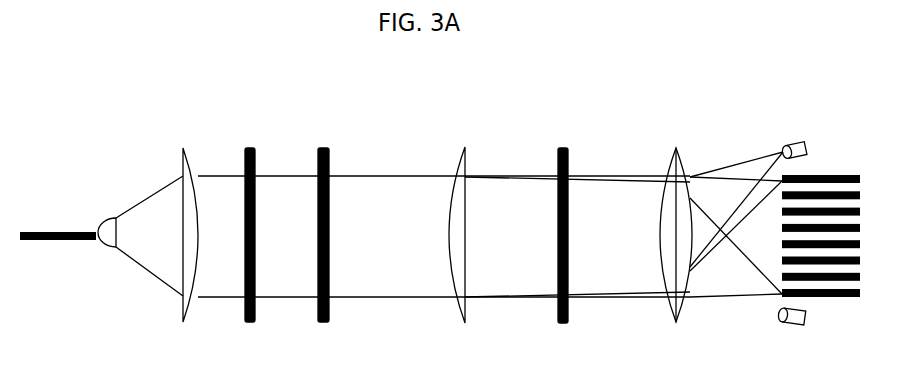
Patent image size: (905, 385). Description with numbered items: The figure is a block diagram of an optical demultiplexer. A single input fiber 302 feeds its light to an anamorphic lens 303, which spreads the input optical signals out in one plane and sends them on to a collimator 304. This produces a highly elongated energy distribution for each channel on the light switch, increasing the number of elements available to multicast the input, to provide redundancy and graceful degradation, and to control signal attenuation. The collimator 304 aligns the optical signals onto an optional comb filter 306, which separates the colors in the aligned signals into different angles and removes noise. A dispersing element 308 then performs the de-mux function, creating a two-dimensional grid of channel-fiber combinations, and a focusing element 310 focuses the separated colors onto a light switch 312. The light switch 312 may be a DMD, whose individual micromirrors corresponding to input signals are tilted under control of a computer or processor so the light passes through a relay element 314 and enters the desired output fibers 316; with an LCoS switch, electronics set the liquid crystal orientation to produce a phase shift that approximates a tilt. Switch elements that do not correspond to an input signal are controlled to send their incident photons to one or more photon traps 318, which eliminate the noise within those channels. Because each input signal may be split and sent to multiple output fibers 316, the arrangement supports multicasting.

The input fiber 302 is at (55, 225).
The anamorphic lens 303 is at (105, 248).
The collimator 304 is at (182, 146).
The comb filter 306 is at (250, 323).
The dispersing element 308 is at (323, 147).
The focusing element 310 is at (465, 323).
The light switch 312 is at (563, 147).
The relay element 314 is at (676, 323).
The output fibers 316 is at (831, 172).
The photon traps 318 is at (793, 145).